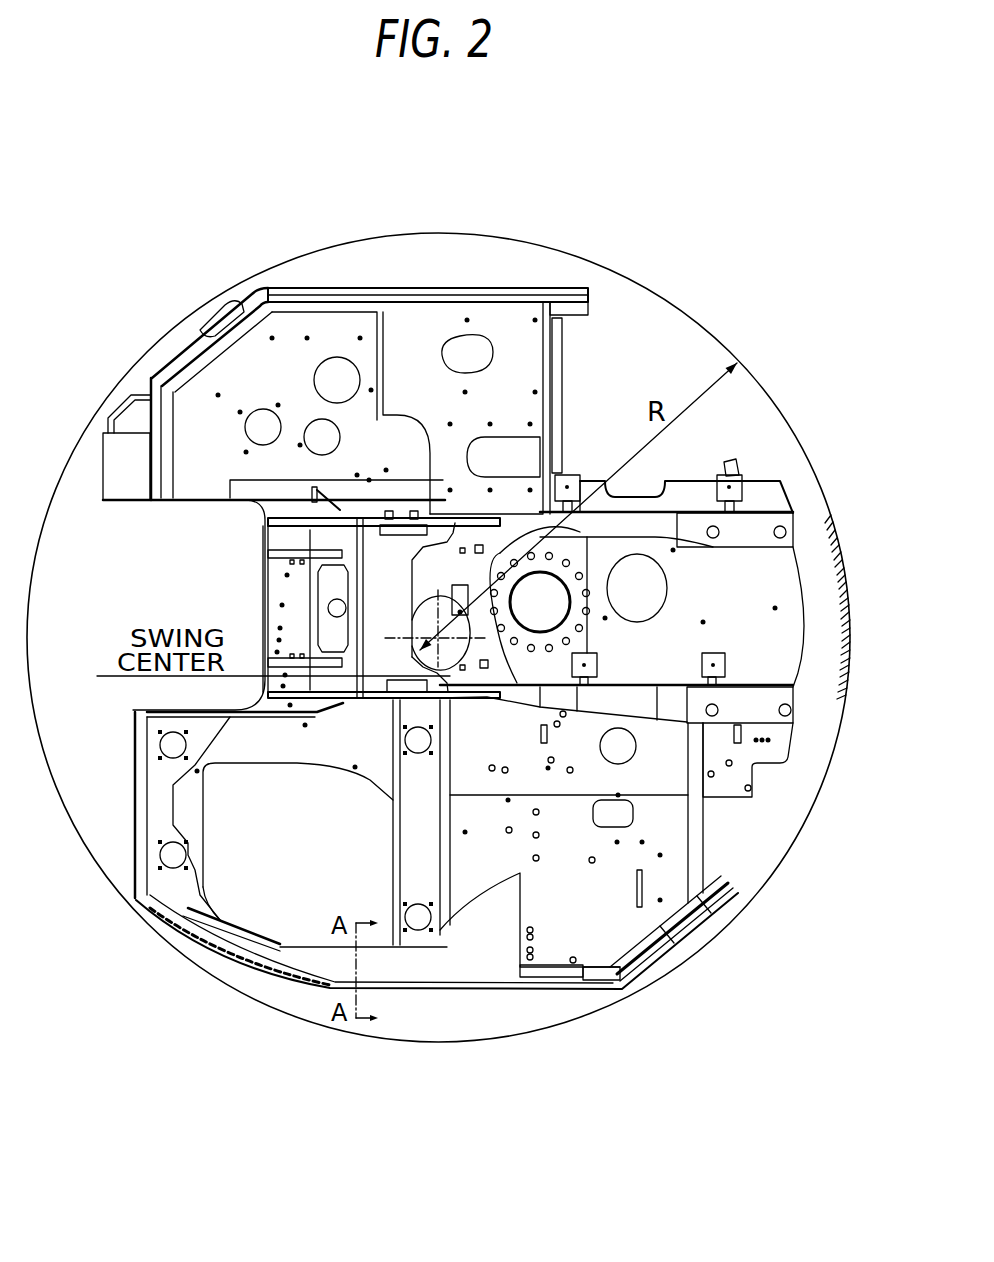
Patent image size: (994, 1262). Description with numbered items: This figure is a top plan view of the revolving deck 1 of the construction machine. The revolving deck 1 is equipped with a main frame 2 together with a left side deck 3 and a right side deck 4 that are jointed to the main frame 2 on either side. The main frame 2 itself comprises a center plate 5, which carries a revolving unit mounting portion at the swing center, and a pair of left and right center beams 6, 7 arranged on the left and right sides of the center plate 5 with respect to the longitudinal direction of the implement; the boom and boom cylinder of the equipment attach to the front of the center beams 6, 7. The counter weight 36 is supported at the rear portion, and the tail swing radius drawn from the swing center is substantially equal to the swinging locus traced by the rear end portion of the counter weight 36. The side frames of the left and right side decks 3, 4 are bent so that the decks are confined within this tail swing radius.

The revolving deck 1 is at (512, 223).
The main frame 2 is at (256, 604).
The left side deck 3 is at (262, 985).
The right side deck 4 is at (334, 278).
The center plate 5 is at (793, 612).
The left center beam 6 is at (367, 700).
The right center beam 7 is at (380, 517).
The counter weight 36 is at (845, 529).